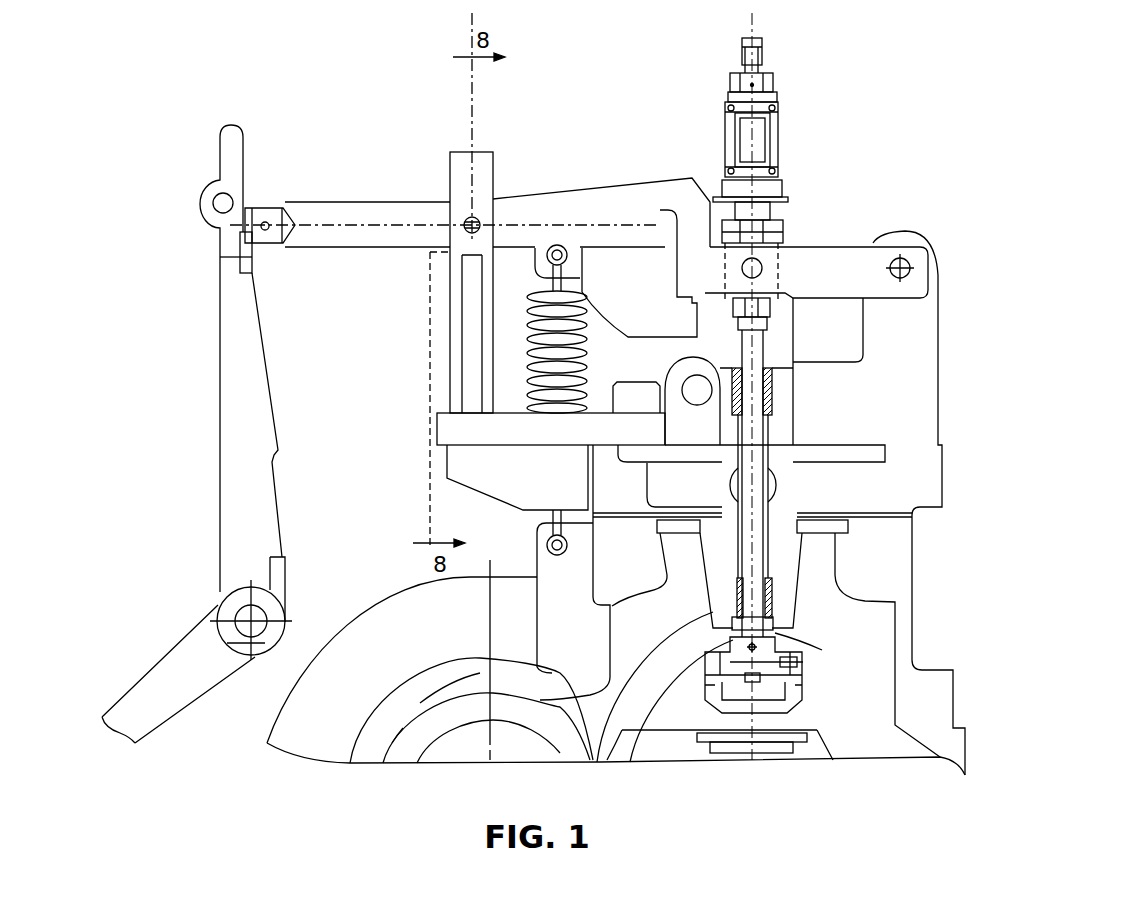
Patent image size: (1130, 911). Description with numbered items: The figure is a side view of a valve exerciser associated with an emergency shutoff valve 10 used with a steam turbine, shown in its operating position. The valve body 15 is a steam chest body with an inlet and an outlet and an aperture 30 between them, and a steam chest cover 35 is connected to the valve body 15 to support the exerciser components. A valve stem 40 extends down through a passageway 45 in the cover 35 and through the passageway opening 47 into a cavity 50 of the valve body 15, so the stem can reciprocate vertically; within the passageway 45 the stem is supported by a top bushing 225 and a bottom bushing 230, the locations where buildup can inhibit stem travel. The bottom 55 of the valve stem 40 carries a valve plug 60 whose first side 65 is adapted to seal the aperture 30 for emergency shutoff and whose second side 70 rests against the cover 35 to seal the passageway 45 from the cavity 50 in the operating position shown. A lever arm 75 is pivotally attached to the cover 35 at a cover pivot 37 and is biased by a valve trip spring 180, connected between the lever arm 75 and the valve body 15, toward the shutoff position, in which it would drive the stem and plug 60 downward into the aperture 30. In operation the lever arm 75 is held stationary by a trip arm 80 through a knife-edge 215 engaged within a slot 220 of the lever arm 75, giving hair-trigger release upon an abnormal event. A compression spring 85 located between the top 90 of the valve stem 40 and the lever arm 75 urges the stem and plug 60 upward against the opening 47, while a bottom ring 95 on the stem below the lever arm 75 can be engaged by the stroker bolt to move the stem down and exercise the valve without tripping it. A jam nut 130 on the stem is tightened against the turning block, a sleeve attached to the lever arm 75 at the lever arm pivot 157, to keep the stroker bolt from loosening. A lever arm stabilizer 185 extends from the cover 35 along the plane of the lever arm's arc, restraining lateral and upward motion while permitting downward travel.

The emergency shutoff valve 10 is at (342, 37).
The valve body 15 is at (940, 695).
The aperture 30 is at (780, 743).
The steam chest cover 35 is at (933, 467).
The cover pivot 37 is at (907, 262).
The valve stem 40 is at (757, 450).
The passageway 45 is at (767, 507).
The passageway opening 47 is at (772, 630).
The cavity 50 is at (880, 645).
The bottom of the valve stem 55 is at (593, 762).
The valve plug 60 is at (712, 687).
The first side 65 is at (715, 707).
The second side 70 is at (628, 762).
The lever arm 75 is at (525, 190).
The trip arm 80 is at (227, 390).
The compression spring 85 is at (780, 107).
The top of the valve stem 90 is at (762, 63).
The bottom ring 95 is at (772, 311).
The jam nut 130 is at (800, 270).
The lever arm pivot 157 is at (758, 262).
The valve trip spring 180 is at (540, 340).
The lever arm stabilizer 185 is at (458, 167).
The knife-edge 215 is at (247, 210).
The slot 220 is at (272, 235).
The top bushing 225 is at (769, 392).
The bottom bushing 230 is at (787, 600).